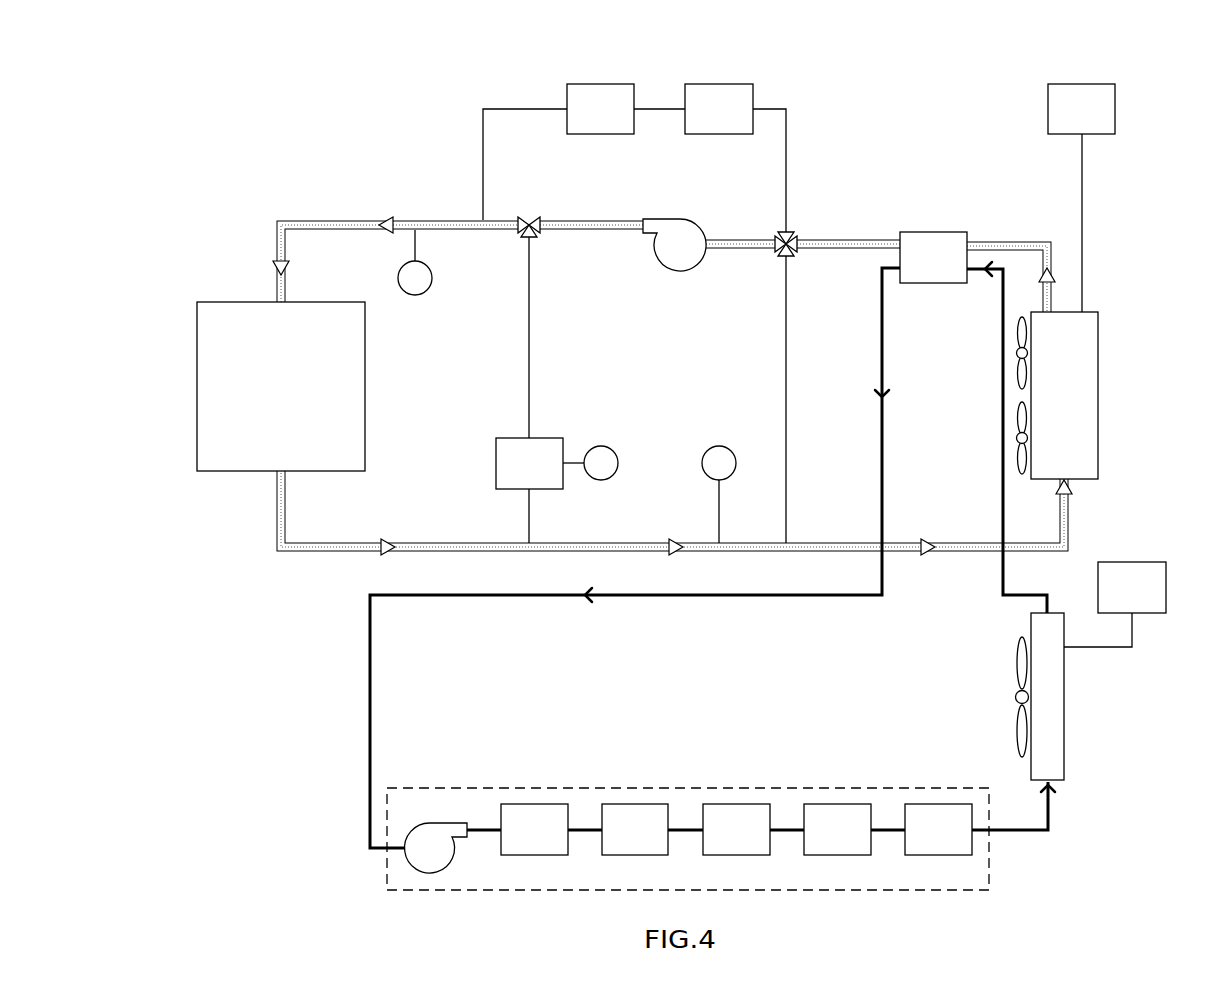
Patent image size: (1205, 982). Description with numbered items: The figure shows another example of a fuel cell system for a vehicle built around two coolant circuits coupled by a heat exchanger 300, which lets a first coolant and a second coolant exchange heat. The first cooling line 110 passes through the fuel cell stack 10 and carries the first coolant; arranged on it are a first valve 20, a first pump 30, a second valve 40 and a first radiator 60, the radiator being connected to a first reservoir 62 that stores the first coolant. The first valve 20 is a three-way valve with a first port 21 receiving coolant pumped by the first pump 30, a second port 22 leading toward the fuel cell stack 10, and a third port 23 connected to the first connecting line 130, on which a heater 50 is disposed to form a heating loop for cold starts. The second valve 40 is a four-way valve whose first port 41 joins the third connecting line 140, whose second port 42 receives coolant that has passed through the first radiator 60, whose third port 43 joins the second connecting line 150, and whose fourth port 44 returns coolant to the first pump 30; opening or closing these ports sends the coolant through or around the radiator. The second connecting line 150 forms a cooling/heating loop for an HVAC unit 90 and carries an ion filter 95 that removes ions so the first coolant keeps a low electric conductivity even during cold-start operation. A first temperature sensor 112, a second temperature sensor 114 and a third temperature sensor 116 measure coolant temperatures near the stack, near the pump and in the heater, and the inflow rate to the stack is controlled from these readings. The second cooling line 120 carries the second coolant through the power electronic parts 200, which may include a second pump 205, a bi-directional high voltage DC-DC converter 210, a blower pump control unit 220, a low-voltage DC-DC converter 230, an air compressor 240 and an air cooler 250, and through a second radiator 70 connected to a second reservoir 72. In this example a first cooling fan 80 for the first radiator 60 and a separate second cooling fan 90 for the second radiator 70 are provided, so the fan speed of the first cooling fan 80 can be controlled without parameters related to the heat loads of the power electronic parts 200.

The fuel cell stack 10 is at (197, 384).
The first valve 20 is at (529, 225).
The first port 21 is at (541, 231).
The second port 22 is at (517, 228).
The third port 23 is at (527, 240).
The first pump 30 is at (678, 222).
The second valve 40 is at (788, 245).
The first port 41 is at (784, 258).
The second port 42 is at (798, 250).
The third port 43 is at (784, 231).
The fourth port 44 is at (775, 249).
The heater 50 is at (496, 463).
The first radiator 60 is at (1099, 396).
The first reservoir 62 is at (1082, 83).
The second radiator 70 is at (1065, 726).
The second reservoir 72 is at (1132, 561).
The first cooling fan 80 is at (1016, 438).
The HVAC unit / second cooling fan 90 is at (600, 83).
The ion filter 95 is at (718, 83).
The first cooling line 110 is at (347, 219).
The first temperature sensor 112 is at (415, 296).
The second temperature sensor 114 is at (719, 446).
The third temperature sensor 116 is at (600, 446).
The second cooling line 120 is at (369, 718).
The first connecting line 130 is at (529, 517).
The third connecting line 140 is at (788, 461).
The second connecting line 150 is at (507, 108).
The power electronic parts 200 is at (989, 875).
The second pump 205 is at (440, 822).
The bi-directional high voltage DC-DC converter 210 is at (534, 803).
The blower pump control unit 220 is at (634, 803).
The low-voltage DC-DC converter 230 is at (736, 803).
The air compressor 240 is at (837, 803).
The air cooler 250 is at (938, 803).
The heat exchanger 300 is at (932, 231).